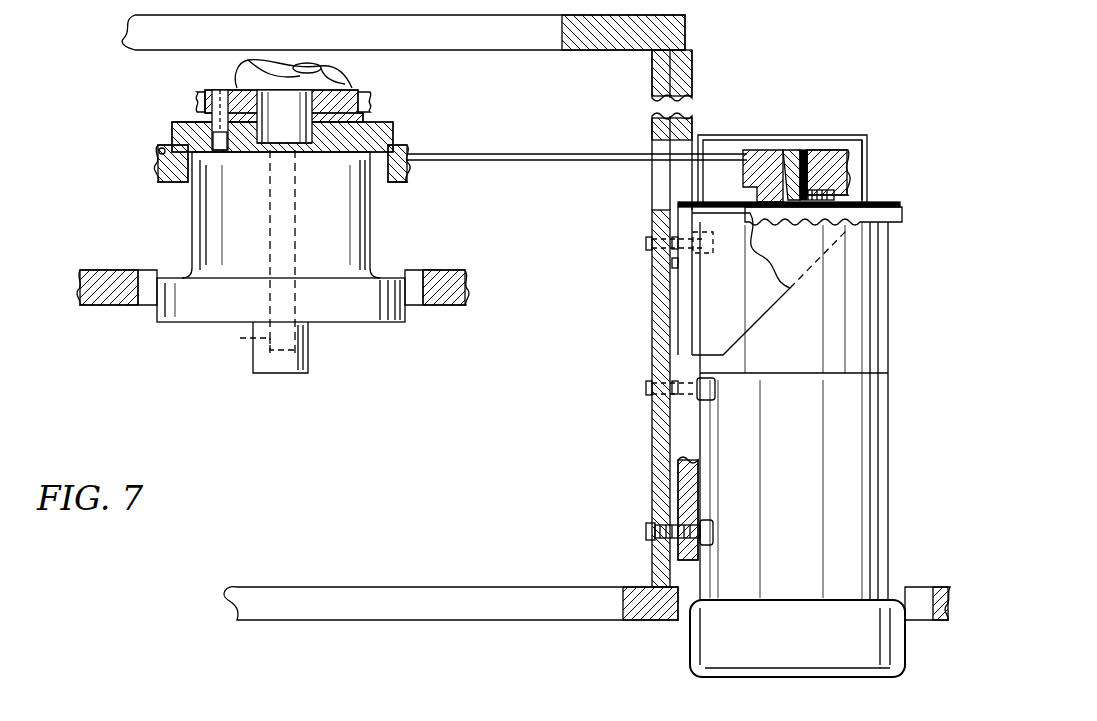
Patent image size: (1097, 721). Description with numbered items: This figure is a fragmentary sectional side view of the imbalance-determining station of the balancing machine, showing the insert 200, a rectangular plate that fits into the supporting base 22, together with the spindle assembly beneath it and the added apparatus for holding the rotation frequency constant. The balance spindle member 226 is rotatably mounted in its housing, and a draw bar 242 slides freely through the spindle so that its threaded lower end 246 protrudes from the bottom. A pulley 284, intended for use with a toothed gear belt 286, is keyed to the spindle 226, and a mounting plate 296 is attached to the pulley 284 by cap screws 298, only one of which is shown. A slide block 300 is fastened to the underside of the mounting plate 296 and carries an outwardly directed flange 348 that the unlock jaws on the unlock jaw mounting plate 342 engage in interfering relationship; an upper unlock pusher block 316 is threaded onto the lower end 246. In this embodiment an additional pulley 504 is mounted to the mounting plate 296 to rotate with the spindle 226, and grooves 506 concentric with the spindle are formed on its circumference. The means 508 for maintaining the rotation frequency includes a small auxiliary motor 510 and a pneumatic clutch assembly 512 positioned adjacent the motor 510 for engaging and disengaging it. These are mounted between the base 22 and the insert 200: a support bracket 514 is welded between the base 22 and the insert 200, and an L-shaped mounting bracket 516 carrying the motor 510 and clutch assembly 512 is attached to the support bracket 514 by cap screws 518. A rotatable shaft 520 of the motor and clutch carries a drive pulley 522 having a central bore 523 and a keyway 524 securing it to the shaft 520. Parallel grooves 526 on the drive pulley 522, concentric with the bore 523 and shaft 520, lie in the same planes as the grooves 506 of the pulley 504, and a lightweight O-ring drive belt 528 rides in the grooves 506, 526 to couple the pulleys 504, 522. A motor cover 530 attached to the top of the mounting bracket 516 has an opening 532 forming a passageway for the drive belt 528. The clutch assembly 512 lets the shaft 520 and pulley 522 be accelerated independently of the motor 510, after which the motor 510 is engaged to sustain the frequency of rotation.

The base 22 is at (505, 620).
The insert 200 is at (540, 40).
The balance spindle member 226 is at (333, 80).
The draw bar 242 is at (262, 106).
The lower end of draw bar 246 is at (256, 346).
The pulley 284 is at (366, 97).
The toothed gear belt 286 is at (203, 102).
The mounting plate 296 is at (172, 138).
The cap screws 298 is at (176, 123).
The slide block 300 is at (368, 226).
The upper unlock pusher block 316 is at (262, 360).
The unlock jaw mounting plate 342 is at (100, 298).
The outwardly directed flange 348 is at (185, 276).
The additional pulley 504 is at (160, 183).
The grooves 506 is at (411, 178).
The means for maintaining substantially constant the rotation frequency 508 is at (752, 98).
The auxiliary motor 510 is at (857, 470).
The clutch assembly 512 is at (877, 327).
The support bracket 514 is at (648, 427).
The L-shaped mounting bracket 516 is at (902, 210).
The cap screws 518 is at (646, 243).
The rotatable shaft 520 is at (805, 150).
The drive pulley 522 is at (766, 150).
The central bore 523 is at (795, 160).
The keyway 524 is at (836, 196).
The parallel grooves 526 is at (848, 178).
The O-ring drive belt 528 is at (160, 151).
The motor cover 530 is at (850, 135).
The opening 532 is at (716, 138).